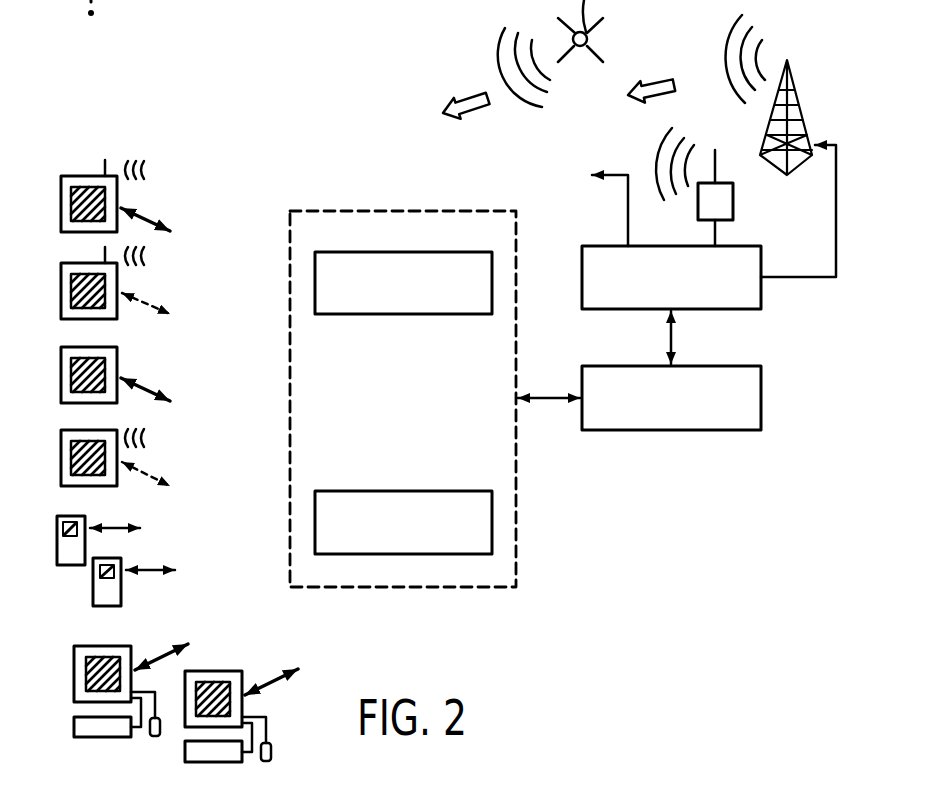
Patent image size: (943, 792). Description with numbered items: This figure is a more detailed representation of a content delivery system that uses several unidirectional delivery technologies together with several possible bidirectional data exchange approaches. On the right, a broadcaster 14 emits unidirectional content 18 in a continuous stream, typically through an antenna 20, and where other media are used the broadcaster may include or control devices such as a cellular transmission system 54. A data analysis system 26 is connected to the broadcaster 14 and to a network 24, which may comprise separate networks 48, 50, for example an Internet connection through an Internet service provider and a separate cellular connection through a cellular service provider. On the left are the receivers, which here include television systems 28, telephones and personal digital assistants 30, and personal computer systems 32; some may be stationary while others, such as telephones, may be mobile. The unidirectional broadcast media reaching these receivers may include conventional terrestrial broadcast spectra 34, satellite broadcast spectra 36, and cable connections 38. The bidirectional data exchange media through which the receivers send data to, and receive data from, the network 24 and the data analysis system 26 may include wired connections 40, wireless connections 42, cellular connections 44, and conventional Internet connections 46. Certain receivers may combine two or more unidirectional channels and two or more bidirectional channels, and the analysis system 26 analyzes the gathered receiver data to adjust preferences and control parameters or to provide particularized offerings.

The broadcaster 14 is at (672, 246).
The unidirectional content 18 is at (466, 93).
The antenna 20 is at (789, 78).
The network 24 is at (404, 211).
The data analysis system 26 is at (672, 431).
The television systems 28 is at (97, 233).
The telephones and personal digital assistants 30 is at (68, 565).
The personal computer systems 32 is at (102, 646).
The terrestrial broadcast spectra 34 is at (146, 166).
The satellite broadcast spectra 36 is at (146, 435).
The cable connections 38 is at (124, 358).
The wired connections 40 is at (150, 217).
The wireless connections 42 is at (146, 303).
The cellular connections 44 is at (118, 532).
The Internet connections 46 is at (159, 661).
The network 48 is at (358, 314).
The network 50 is at (437, 491).
The cellular transmission system 54 is at (733, 205).